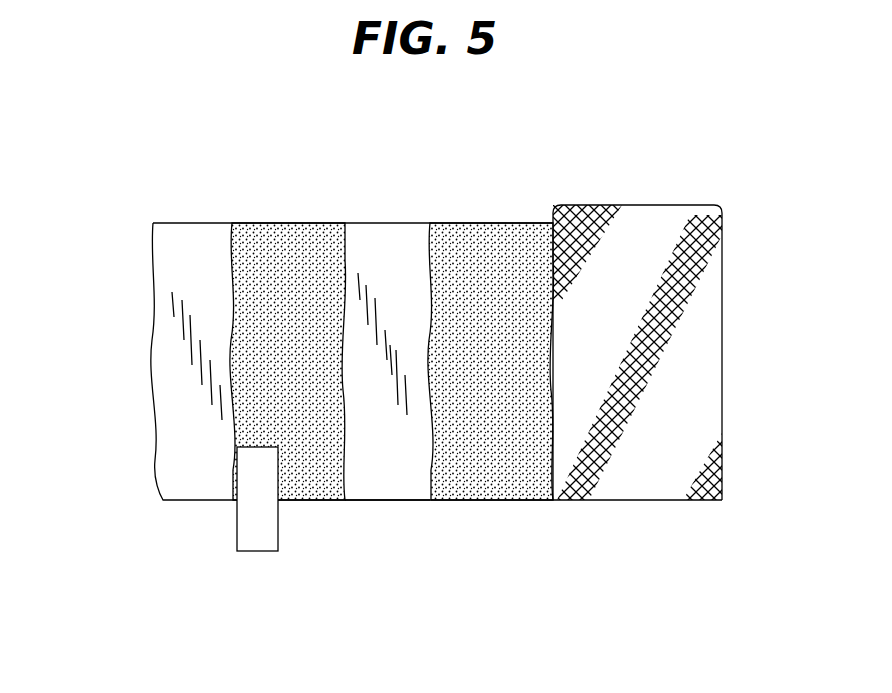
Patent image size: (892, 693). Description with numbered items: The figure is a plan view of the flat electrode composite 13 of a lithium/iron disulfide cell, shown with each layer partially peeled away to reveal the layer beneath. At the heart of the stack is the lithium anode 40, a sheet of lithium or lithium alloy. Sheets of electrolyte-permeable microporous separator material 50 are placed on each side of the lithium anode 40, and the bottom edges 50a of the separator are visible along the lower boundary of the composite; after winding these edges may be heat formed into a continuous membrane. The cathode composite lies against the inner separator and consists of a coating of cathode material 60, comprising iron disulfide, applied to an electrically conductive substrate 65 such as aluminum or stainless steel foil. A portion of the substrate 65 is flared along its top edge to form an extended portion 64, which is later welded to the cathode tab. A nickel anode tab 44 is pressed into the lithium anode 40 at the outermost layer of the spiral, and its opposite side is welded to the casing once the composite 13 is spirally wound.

The flat electrode composite 13 is at (225, 135).
The lithium anode 40 is at (285, 253).
The anode tab 44 is at (268, 552).
The separator sheet 50 is at (174, 238).
The bottom edge of separator 50a is at (388, 493).
The cathode material 60 is at (483, 247).
The extended portion of cathode substrate 64 is at (658, 364).
The substrate 65 is at (658, 483).